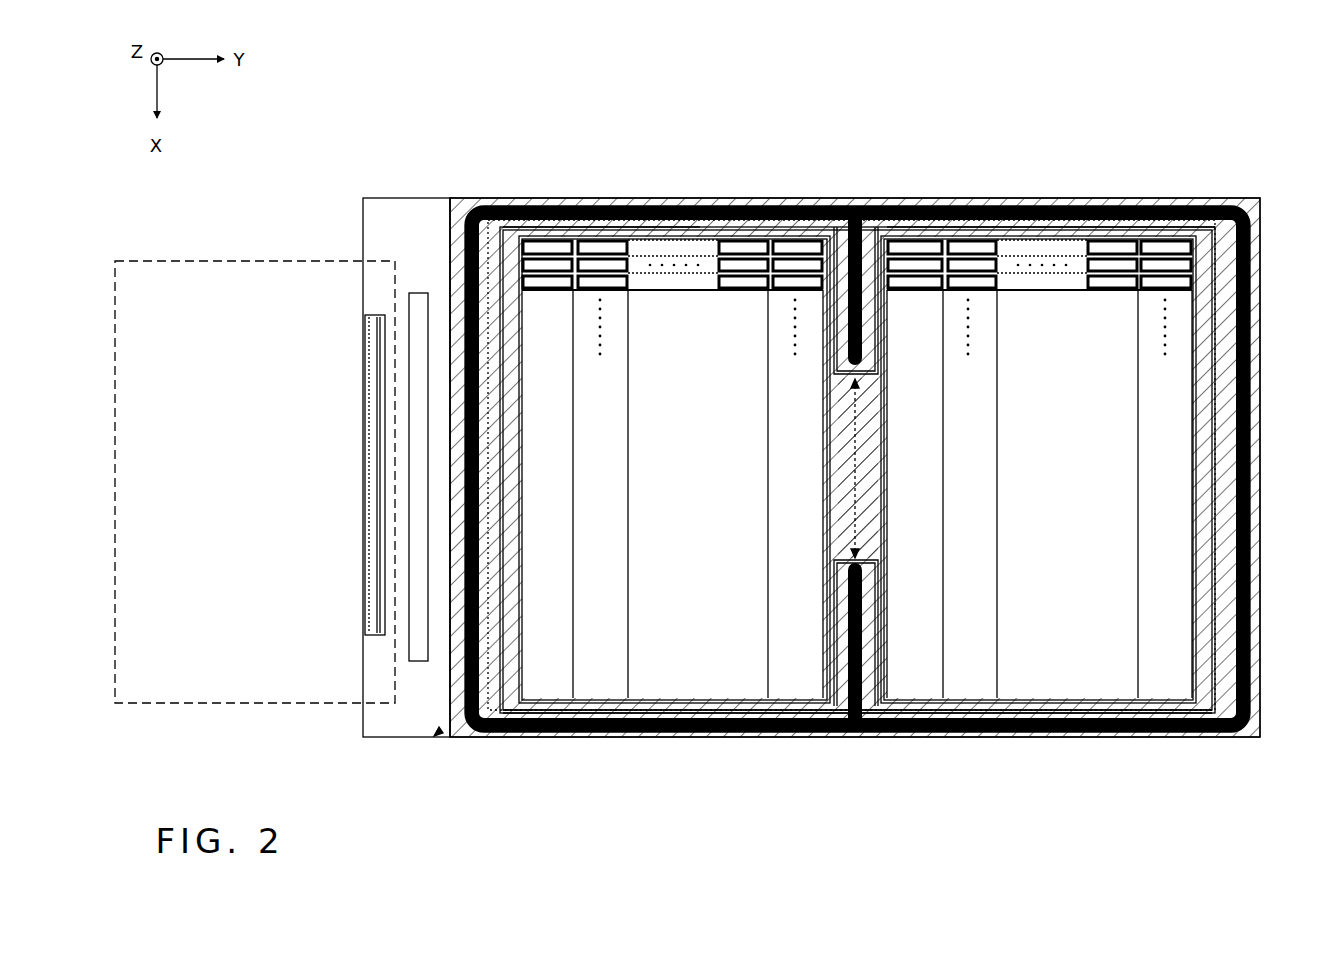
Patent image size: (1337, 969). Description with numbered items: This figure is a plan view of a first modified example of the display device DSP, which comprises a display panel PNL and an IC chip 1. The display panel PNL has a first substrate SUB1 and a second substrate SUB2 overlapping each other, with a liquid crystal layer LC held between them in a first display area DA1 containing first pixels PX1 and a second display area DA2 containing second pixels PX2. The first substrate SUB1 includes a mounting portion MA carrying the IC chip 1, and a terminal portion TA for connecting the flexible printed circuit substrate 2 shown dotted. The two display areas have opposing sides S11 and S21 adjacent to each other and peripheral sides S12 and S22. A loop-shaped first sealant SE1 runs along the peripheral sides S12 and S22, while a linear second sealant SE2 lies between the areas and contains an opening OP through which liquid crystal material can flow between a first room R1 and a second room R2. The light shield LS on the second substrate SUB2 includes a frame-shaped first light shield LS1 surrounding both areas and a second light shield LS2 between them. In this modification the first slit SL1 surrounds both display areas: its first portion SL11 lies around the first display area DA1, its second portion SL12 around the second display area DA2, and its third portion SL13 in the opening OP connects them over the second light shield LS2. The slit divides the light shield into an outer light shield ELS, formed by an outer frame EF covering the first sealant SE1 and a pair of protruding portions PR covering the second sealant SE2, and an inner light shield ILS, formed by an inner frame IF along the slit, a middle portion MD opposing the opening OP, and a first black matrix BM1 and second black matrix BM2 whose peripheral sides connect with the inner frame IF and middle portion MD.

The flexible printed circuit substrate 2 is at (220, 705).
The IC chip 1 is at (420, 670).
The terminal portion TA is at (378, 642).
The mounting portion MA is at (439, 730).
The first substrate SUB1 is at (413, 215).
The second substrate SUB2 is at (478, 222).
The first portion SL11 is at (548, 226).
The first pixels PX1 is at (601, 226).
The first display area DA1 is at (672, 230).
The first slit SL1 is at (757, 226).
The protruding portions PR is at (872, 218).
The second pixels PX2 is at (970, 226).
The second display area DA2 is at (1045, 230).
The second portion SL12 is at (1118, 226).
The peripheral side S12 is at (653, 238).
The peripheral side S22 is at (1058, 236).
The first black matrix BM1 is at (768, 362).
The second black matrix BM2 is at (1137, 363).
The second sealant SE2 is at (860, 333).
The third portion SL13 is at (851, 376).
The opening OP is at (858, 430).
The first room R1 is at (674, 479).
The second room R2 is at (1044, 481).
The liquid crystal layer LC is at (1165, 468).
The opposing side S11 is at (825, 502).
The opposing side S21 is at (886, 478).
The middle portion MD is at (880, 520).
The inner frame IF is at (1193, 603).
The outer light shield ELS is at (466, 728).
The light shield LS is at (601, 735).
The first light shield LS1 is at (688, 715).
The inner light shield ILS is at (735, 706).
The first sealant SE1 is at (792, 722).
The second light shield LS2 is at (885, 660).
The outer frame EF is at (1203, 737).
The display panel PNL is at (1258, 738).
The display device DSP is at (1238, 128).